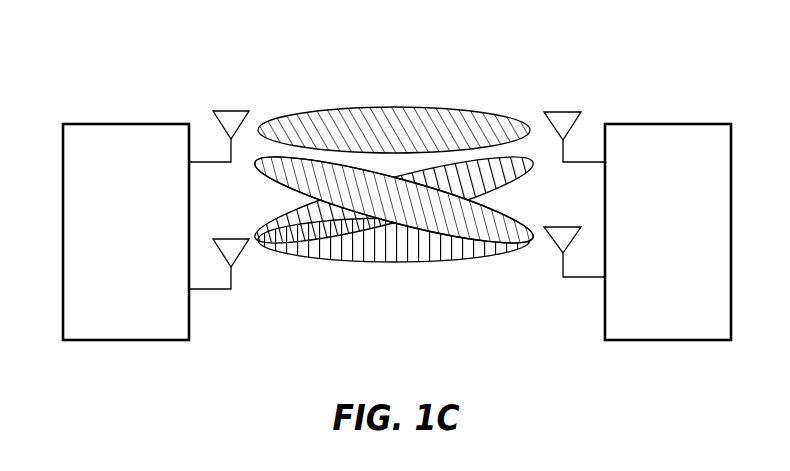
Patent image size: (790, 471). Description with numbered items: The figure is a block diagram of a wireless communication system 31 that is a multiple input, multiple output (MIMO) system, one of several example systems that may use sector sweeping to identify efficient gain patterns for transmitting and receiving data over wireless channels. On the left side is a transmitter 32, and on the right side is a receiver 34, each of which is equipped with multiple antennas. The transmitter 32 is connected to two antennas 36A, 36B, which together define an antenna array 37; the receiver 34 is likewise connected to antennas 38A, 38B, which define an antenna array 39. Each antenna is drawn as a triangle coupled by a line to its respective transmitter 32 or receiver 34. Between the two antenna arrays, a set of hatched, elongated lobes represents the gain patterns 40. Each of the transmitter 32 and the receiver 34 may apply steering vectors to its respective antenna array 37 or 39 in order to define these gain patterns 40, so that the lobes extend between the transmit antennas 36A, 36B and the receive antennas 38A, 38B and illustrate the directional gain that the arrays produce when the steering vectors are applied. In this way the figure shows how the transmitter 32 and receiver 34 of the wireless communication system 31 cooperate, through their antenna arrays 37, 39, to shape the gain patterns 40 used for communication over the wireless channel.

The wireless communication system 31 is at (122, 36).
The transmitter 32 is at (125, 341).
The receiver 34 is at (667, 341).
The antenna 36A is at (230, 111).
The antenna 36B is at (230, 239).
The antenna 38A is at (566, 112).
The antenna 38B is at (562, 227).
The antenna array 37 is at (235, 344).
The antenna array 39 is at (583, 374).
The gain patterns 40 is at (428, 84).